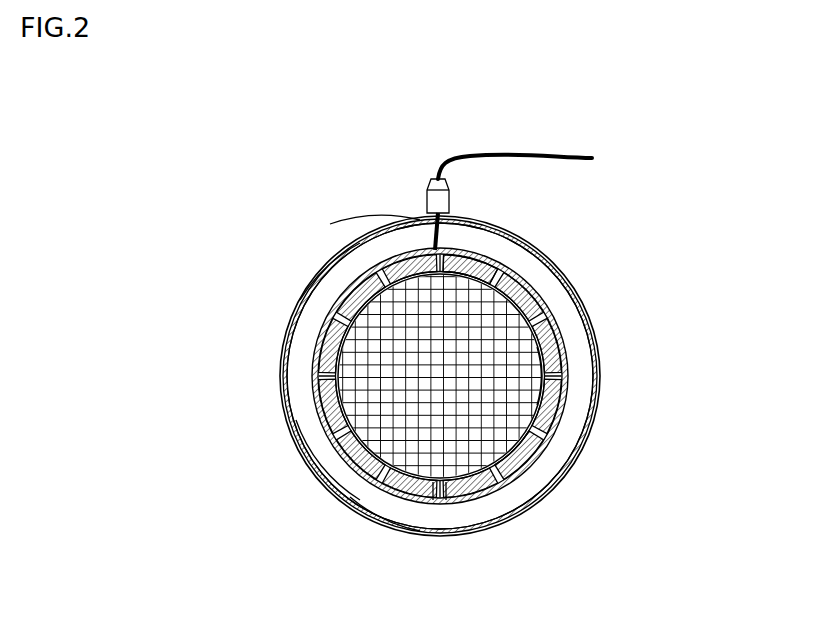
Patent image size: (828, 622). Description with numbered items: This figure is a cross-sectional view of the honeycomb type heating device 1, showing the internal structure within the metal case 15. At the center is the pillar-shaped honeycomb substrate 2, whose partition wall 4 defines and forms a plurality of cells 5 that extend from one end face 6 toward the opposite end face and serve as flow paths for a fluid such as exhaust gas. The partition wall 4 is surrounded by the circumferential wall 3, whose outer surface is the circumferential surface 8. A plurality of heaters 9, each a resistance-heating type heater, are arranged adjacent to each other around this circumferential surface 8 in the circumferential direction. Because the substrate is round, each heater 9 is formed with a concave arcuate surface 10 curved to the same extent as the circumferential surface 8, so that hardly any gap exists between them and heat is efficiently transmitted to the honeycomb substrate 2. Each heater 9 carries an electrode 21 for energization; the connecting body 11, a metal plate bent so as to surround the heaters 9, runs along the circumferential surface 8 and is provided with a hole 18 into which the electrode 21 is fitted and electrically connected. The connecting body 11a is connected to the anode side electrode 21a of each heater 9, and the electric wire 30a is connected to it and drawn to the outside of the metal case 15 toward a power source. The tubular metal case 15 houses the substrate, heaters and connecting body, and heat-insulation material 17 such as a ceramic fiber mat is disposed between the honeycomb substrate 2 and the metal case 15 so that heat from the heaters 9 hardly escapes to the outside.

The honeycomb type heating device 1 is at (660, 106).
The honeycomb substrate 2 is at (348, 479).
The circumferential wall 3 is at (527, 453).
The partition wall 4 is at (560, 400).
The cell 5 is at (514, 381).
The one end face 6 is at (340, 378).
The circumferential surface 8 is at (436, 482).
The heater 9 is at (538, 288).
The concave arcuate surface 10 is at (378, 373).
The connecting body 11 is at (477, 218).
The connecting body 11a is at (440, 376).
The metal case 15 is at (392, 224).
The heat-insulation material 17 is at (345, 282).
The hole 18 is at (378, 522).
The electrode 21 is at (510, 252).
The anode side electrode 21a is at (470, 269).
The electric wire 30a is at (453, 242).